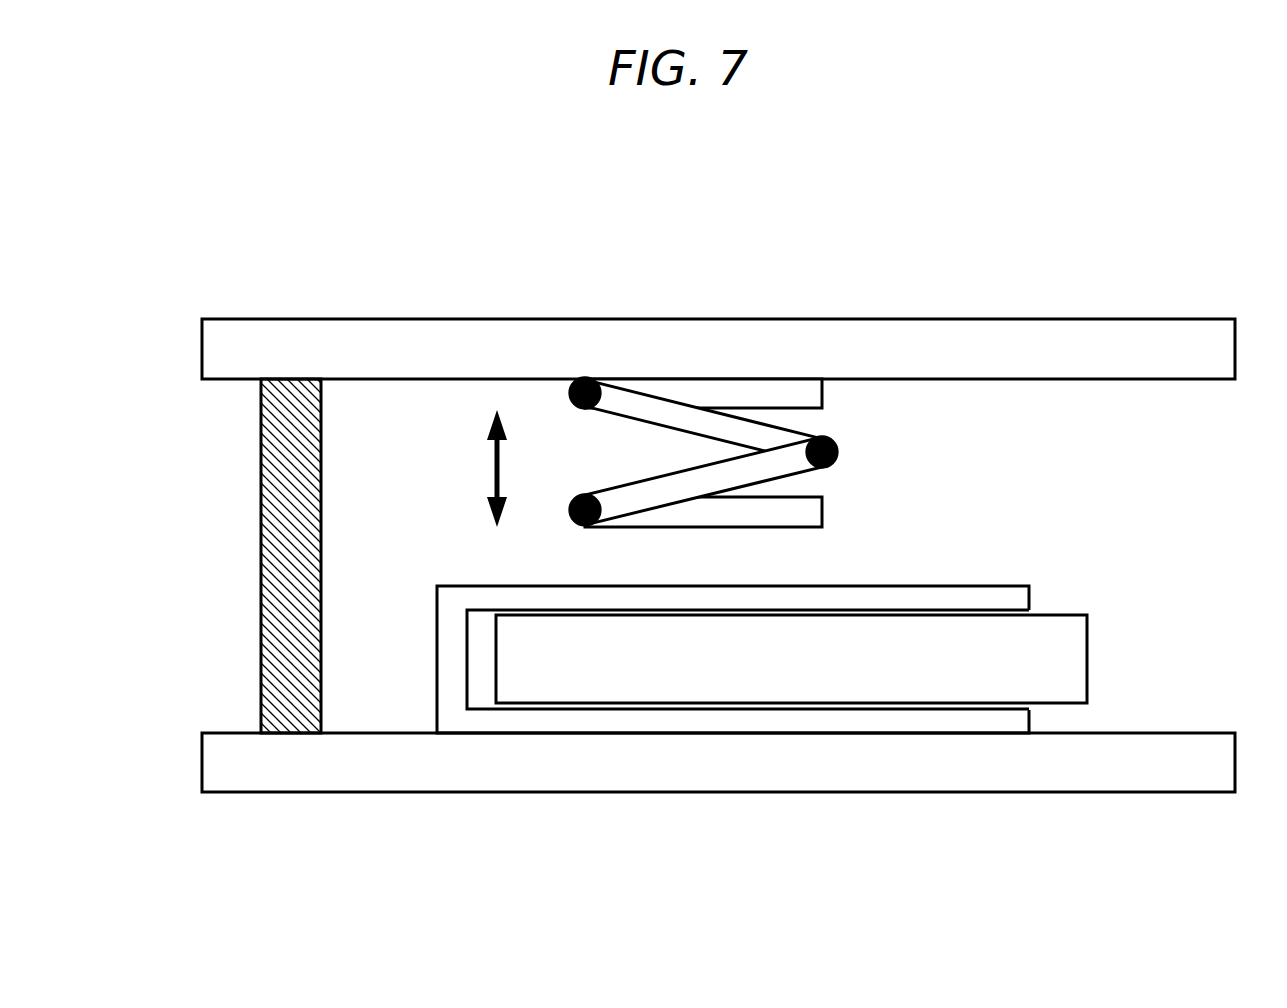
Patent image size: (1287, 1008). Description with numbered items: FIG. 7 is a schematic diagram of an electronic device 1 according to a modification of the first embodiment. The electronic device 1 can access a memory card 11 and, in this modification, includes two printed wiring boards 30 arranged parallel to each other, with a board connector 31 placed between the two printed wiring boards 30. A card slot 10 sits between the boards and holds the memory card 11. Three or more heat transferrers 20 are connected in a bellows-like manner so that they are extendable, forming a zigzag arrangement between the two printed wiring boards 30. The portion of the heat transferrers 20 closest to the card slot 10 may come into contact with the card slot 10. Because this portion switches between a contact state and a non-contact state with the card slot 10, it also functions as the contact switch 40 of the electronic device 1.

The electronic device 1 is at (732, 259).
The card slot 10 is at (437, 645).
The memory card 11 is at (1087, 644).
The heat transferrer 20 is at (727, 473).
The printed wiring board 30 is at (1087, 380).
The board connector 31 is at (260, 468).
The contact switch 40 is at (822, 512).